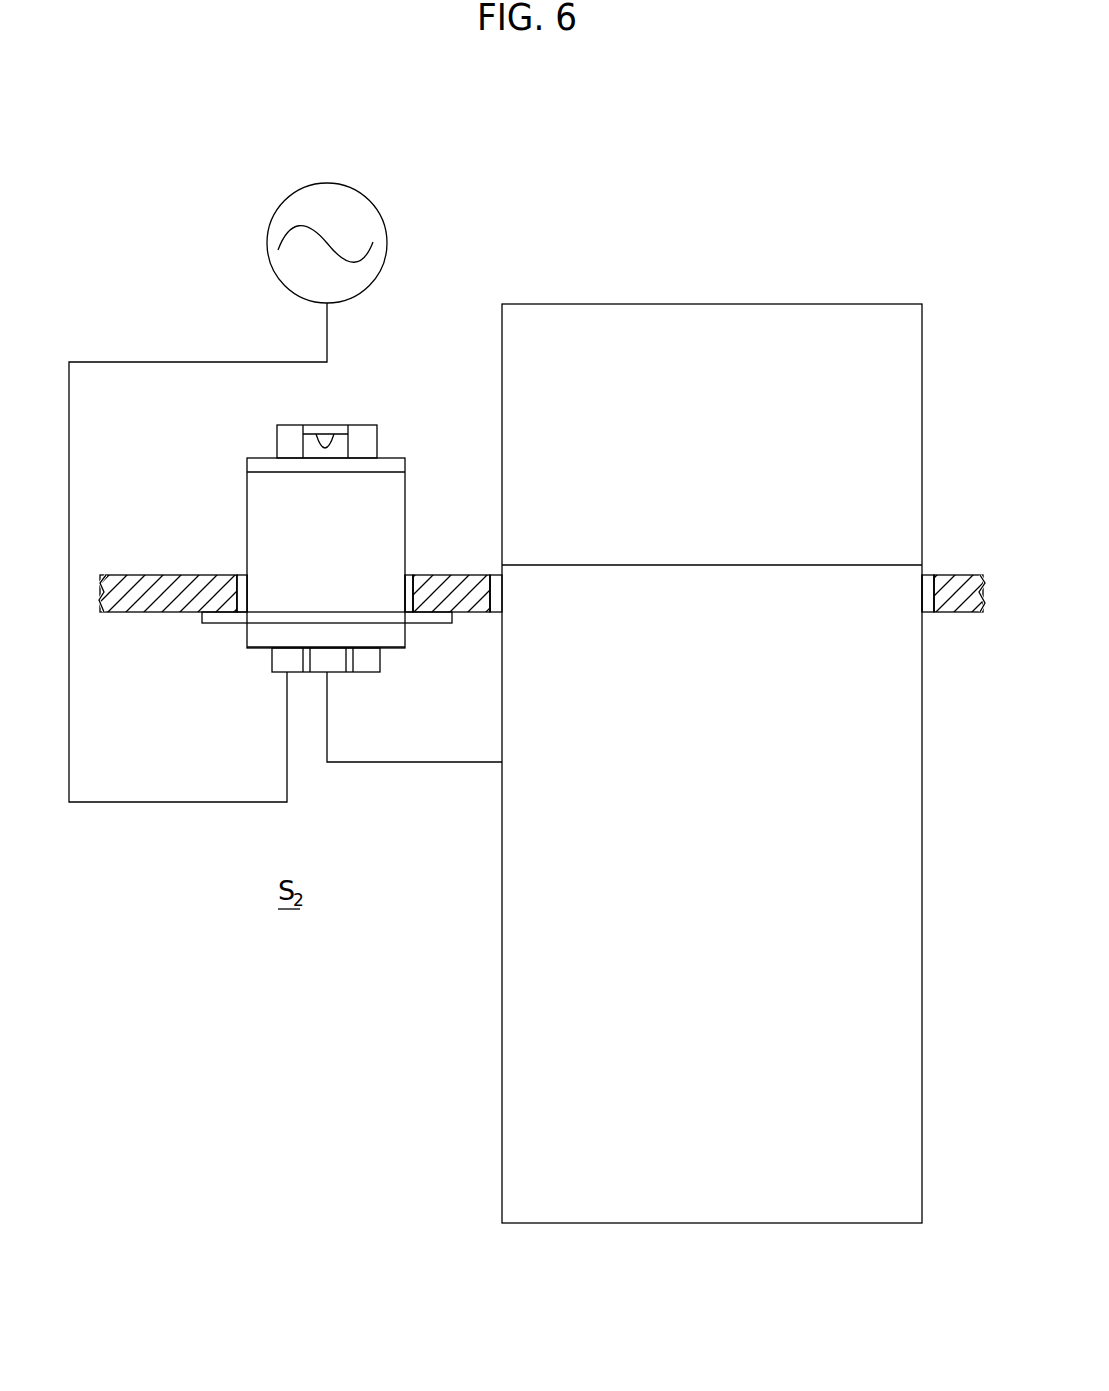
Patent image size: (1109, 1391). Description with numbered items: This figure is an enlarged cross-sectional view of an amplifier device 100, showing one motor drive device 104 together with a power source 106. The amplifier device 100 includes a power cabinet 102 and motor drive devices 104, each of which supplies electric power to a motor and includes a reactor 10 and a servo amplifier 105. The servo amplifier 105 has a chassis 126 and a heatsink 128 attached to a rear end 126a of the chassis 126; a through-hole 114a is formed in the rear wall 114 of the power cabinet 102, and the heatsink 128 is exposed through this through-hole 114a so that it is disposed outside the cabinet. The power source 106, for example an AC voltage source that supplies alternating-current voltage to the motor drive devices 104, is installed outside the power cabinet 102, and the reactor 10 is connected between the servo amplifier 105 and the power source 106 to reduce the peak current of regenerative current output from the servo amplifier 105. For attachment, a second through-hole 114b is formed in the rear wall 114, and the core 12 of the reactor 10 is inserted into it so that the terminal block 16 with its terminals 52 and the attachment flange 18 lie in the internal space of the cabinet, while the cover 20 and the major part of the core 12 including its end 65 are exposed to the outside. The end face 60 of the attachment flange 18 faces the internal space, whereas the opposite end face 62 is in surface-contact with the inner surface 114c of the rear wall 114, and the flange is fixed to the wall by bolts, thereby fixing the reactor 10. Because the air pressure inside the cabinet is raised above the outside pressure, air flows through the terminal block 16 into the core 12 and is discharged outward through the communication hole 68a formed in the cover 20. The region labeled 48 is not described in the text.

The amplifier device 100 is at (921, 124).
The power source 106 is at (277, 207).
The reactor 10 is at (227, 467).
The core 12 is at (377, 507).
The end 65 is at (390, 467).
The cover 20 is at (370, 445).
The communication hole 68a is at (337, 433).
The terminal block 16 is at (262, 642).
The terminals 52 is at (363, 675).
The annular groove 48 is at (385, 615).
The power cabinet 102 is at (140, 573).
The rear wall 114 is at (175, 607).
The through-hole 114a is at (931, 592).
The through-hole 114b is at (240, 597).
The inner surface 114c is at (120, 613).
The attachment flange 18 is at (217, 618).
The end face 60 is at (423, 622).
The end face 62 is at (455, 608).
The servo amplifier 105 is at (753, 1243).
The chassis 126 is at (529, 1044).
The heatsink 128 is at (858, 326).
The rear end 126a is at (889, 562).
The motor drive device 104 is at (392, 1259).